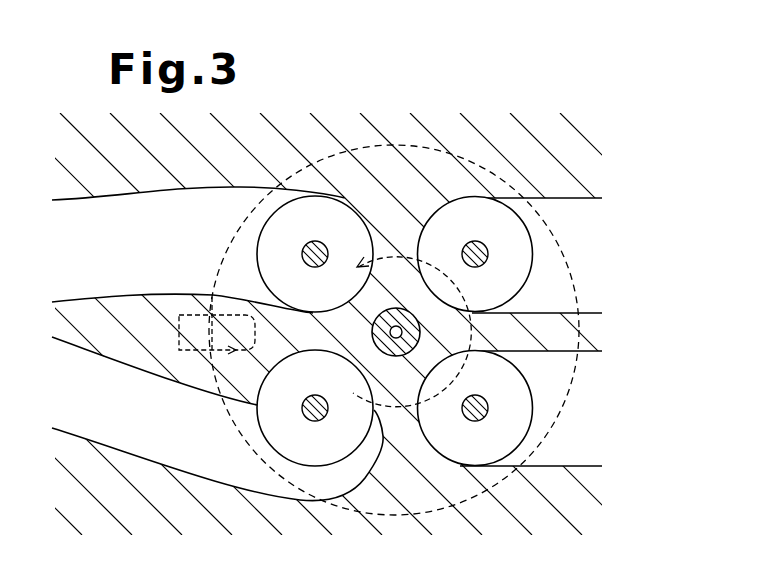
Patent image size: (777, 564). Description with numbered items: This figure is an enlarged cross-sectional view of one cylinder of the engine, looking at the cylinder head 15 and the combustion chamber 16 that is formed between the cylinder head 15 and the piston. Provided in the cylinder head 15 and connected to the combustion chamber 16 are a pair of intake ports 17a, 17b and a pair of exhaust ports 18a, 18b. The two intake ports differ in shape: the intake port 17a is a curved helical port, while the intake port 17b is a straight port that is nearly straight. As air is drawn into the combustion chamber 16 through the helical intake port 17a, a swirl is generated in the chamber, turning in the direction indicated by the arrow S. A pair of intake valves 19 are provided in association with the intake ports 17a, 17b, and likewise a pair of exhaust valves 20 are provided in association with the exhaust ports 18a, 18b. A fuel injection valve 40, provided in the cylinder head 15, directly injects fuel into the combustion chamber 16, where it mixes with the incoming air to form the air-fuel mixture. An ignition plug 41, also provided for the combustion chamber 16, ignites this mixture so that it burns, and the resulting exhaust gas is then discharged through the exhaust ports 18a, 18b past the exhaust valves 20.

The cylinder head 15 is at (558, 148).
The combustion chamber 16 is at (413, 147).
The intake port 17a is at (183, 462).
The intake port 17b is at (167, 205).
The exhaust port 18a is at (567, 207).
The exhaust port 18b is at (550, 446).
The intake valves 19 is at (333, 205).
The exhaust valves 20 is at (470, 208).
The fuel injection valve 40 is at (183, 315).
The ignition plug 41 is at (408, 308).
The arrow S is at (462, 291).